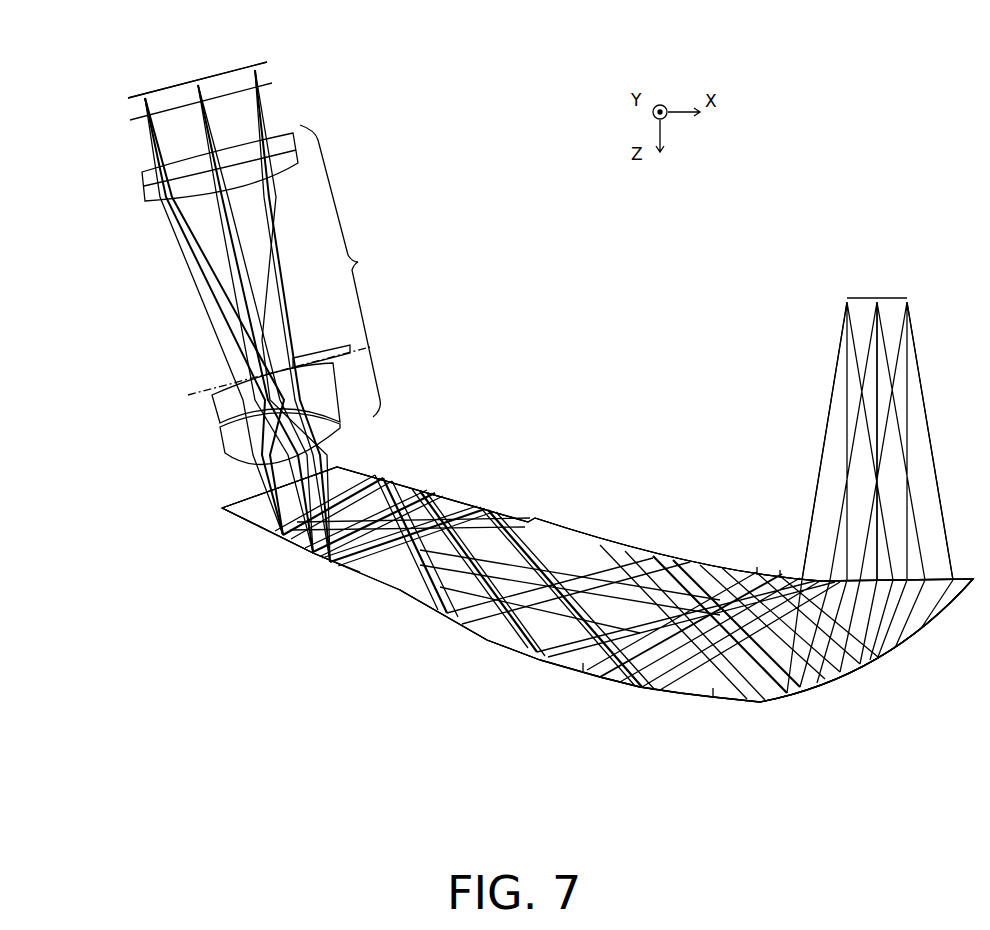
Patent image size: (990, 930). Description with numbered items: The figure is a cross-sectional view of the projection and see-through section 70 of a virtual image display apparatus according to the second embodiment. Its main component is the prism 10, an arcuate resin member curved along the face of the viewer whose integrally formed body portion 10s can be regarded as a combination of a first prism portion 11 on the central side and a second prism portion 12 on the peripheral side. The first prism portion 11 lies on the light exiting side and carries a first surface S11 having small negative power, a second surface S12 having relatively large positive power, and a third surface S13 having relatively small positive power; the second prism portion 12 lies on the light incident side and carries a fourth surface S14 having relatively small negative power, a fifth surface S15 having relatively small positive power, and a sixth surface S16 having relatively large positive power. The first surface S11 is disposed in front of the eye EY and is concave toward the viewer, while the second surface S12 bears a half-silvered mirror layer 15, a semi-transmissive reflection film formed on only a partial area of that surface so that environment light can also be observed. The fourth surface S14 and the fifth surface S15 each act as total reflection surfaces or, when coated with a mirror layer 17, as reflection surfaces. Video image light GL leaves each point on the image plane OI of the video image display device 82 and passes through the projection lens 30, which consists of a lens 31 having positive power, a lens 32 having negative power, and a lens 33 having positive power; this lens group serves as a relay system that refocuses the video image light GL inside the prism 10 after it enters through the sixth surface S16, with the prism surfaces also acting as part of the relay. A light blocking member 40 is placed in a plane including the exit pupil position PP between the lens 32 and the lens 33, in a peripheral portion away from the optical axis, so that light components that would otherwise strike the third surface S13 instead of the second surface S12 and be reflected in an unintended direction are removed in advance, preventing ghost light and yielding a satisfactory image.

The projection and see-through section 70 is at (484, 262).
The prism 10 is at (537, 420).
The body portion 10s is at (550, 538).
The first prism portion 11 is at (715, 690).
The second prism portion 12 is at (400, 577).
The half-silvered mirror layer 15 is at (870, 660).
The mirror layer 17 is at (375, 520).
The projection lens 30 is at (343, 271).
The lens 31 is at (238, 445).
The lens 32 is at (228, 408).
The lens 33 is at (147, 190).
The light blocking member 40 is at (327, 355).
The video image display device 82 is at (137, 108).
The image plane OI is at (253, 68).
The exit pupil position PP is at (200, 390).
The first surface S11 is at (738, 568).
The second surface S12 is at (802, 693).
The third surface S13 is at (605, 680).
The fourth surface S14 is at (415, 488).
The fifth surface S15 is at (272, 537).
The sixth surface S16 is at (243, 493).
The eye EY is at (848, 302).
The video image light GL is at (893, 413).